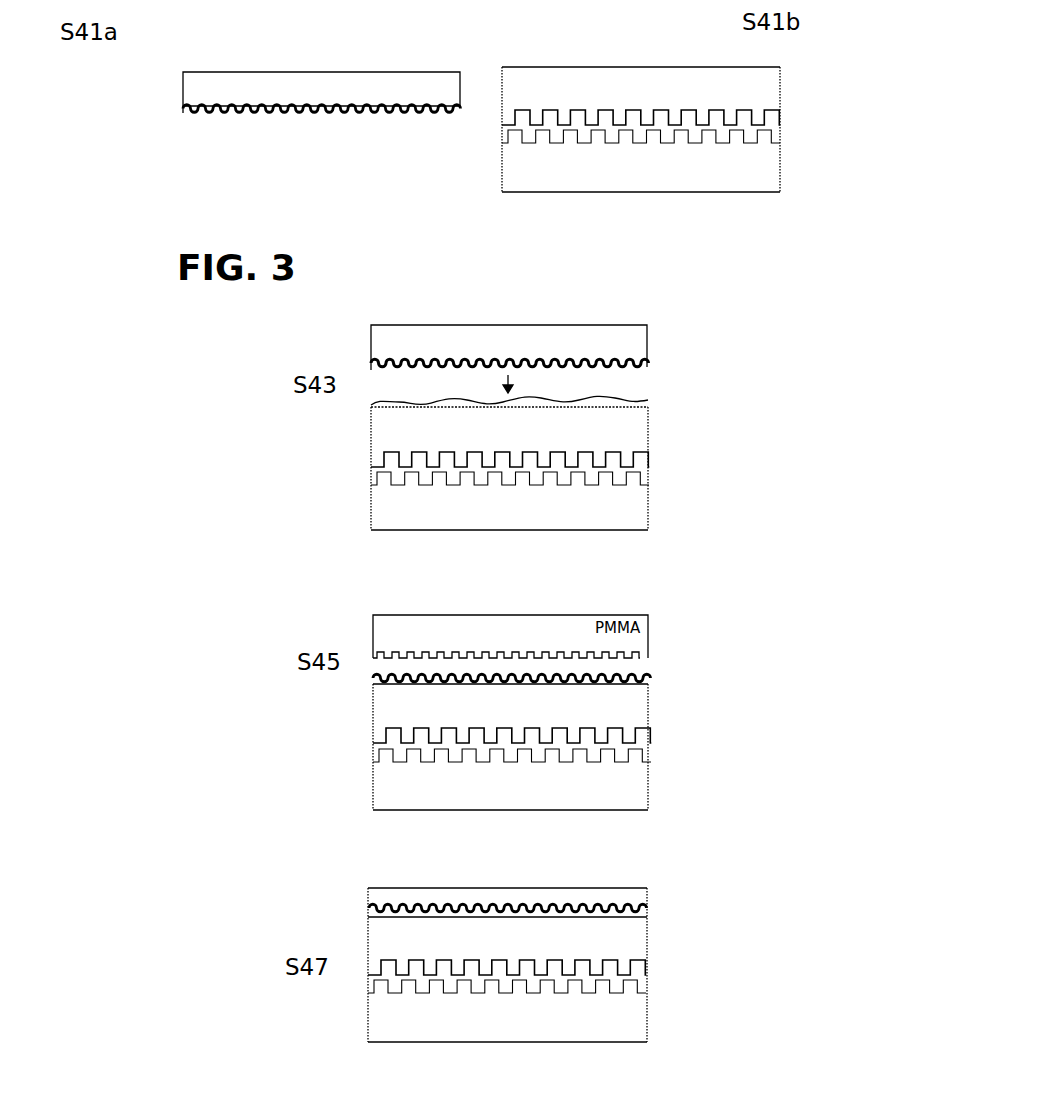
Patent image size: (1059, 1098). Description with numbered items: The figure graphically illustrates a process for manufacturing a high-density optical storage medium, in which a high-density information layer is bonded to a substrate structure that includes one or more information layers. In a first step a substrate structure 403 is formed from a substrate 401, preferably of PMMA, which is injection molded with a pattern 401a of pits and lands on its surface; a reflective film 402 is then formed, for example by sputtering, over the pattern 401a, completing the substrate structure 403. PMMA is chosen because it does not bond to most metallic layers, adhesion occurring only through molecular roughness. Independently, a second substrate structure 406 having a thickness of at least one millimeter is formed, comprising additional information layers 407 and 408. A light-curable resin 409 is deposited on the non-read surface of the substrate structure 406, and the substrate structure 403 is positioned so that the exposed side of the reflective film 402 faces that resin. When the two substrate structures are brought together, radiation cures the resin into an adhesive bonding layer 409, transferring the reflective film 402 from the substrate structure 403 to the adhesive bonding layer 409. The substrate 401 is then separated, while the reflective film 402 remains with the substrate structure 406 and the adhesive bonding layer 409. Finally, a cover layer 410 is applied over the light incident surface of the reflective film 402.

The substrate 401 is at (182, 80).
The pattern of pits and lands 401a is at (183, 107).
The reflective film 402 is at (289, 132).
The substrate structure 403 is at (392, 210).
The second substrate structure 406 is at (616, 296).
The information layer 407 is at (587, 143).
The information layer 408 is at (697, 125).
The light-curable resin / adhesive bonding layer 409 is at (627, 400).
The cover layer 410 is at (637, 888).